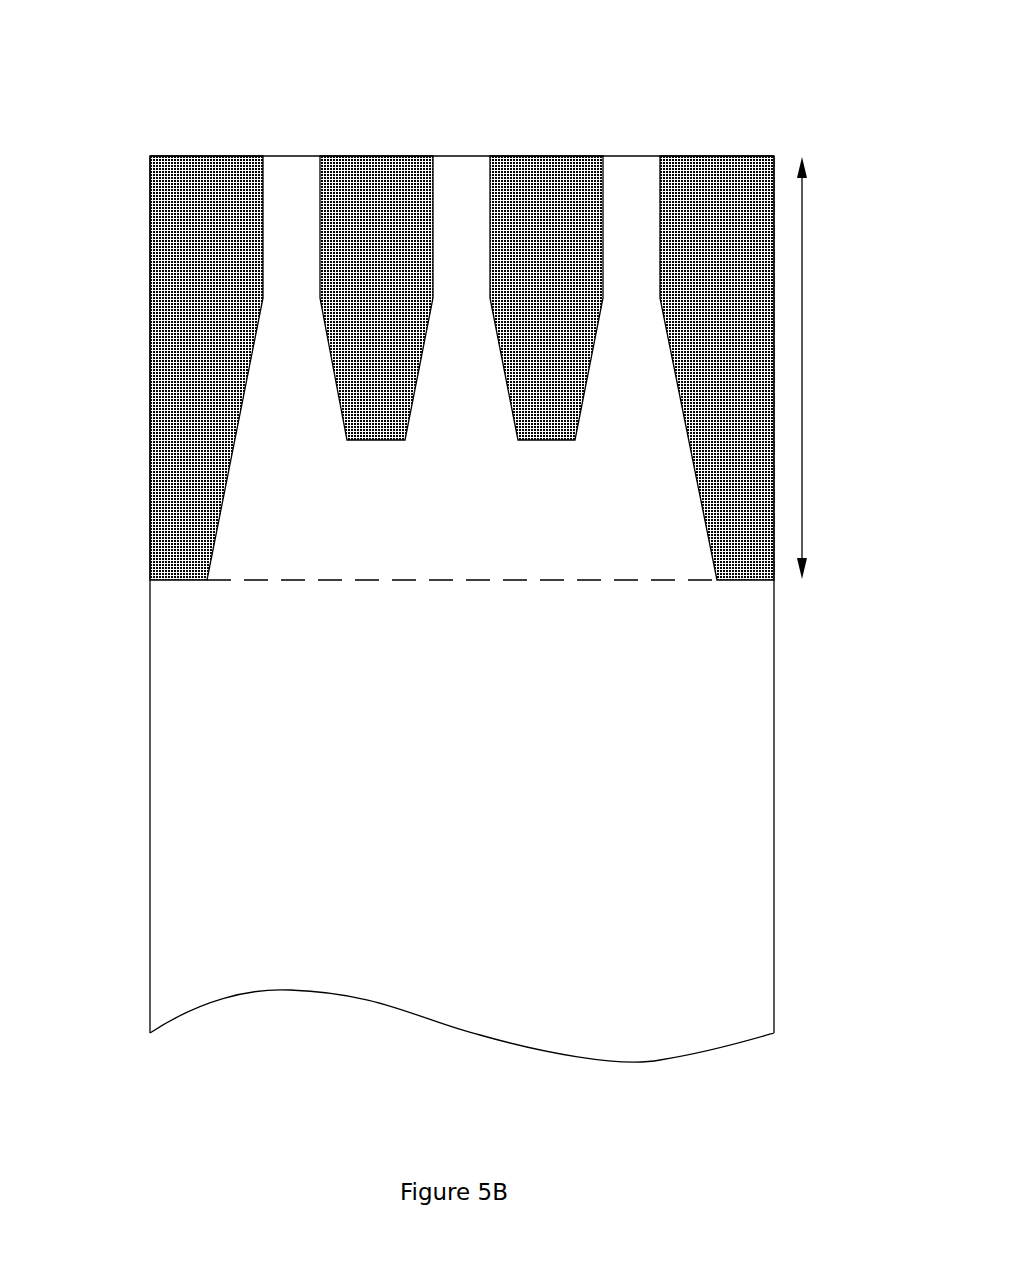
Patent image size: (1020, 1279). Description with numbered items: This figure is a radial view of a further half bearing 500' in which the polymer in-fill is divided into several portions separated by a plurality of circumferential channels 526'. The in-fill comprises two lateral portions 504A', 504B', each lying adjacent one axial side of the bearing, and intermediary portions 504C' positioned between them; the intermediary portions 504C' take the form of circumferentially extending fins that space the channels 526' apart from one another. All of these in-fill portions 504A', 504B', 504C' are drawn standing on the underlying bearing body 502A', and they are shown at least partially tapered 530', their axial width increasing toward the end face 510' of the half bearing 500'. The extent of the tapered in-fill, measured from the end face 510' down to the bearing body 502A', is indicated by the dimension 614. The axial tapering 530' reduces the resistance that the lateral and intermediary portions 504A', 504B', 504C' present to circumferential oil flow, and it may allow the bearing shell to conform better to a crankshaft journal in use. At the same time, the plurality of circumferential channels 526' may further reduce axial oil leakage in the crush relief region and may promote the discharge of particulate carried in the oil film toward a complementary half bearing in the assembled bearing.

The half bearing 500' is at (462, 671).
The substrate 502A' is at (550, 665).
The lateral portion of polymer in-fill 504A' is at (206, 323).
The lateral portion of polymer in-fill 504B' is at (724, 323).
The intermediary portion of polymer in-fill 504C' is at (465, 253).
The end face 510' is at (130, 93).
The circumferential channel 526' is at (473, 97).
The taper 530' is at (462, 412).
The fin height dimension 614 is at (803, 325).